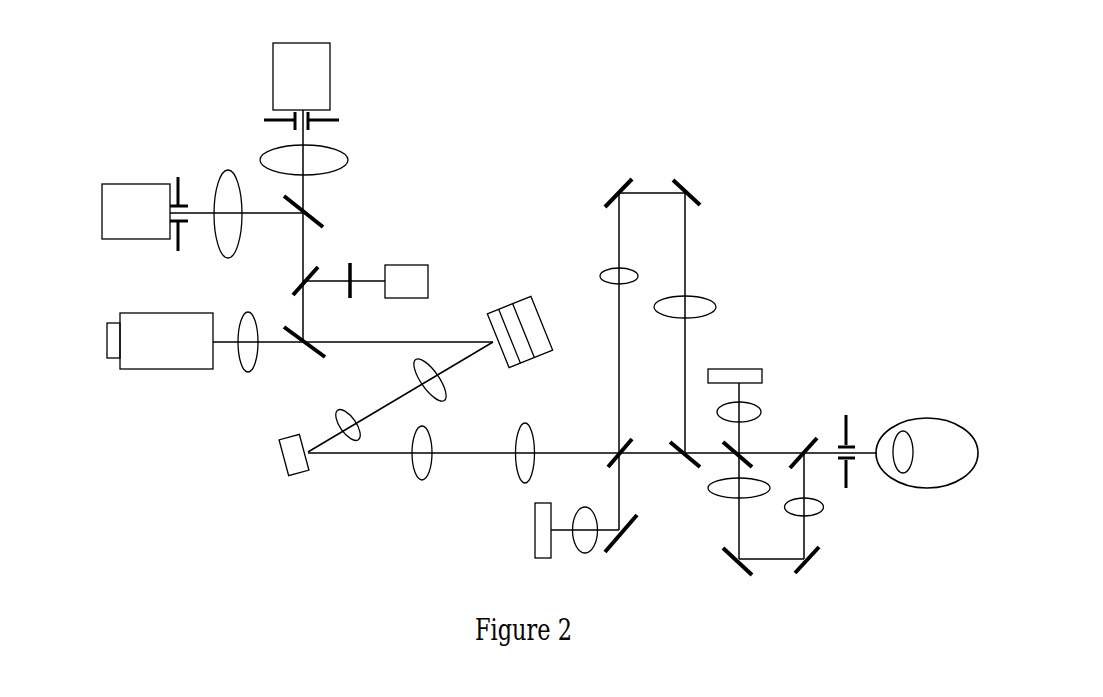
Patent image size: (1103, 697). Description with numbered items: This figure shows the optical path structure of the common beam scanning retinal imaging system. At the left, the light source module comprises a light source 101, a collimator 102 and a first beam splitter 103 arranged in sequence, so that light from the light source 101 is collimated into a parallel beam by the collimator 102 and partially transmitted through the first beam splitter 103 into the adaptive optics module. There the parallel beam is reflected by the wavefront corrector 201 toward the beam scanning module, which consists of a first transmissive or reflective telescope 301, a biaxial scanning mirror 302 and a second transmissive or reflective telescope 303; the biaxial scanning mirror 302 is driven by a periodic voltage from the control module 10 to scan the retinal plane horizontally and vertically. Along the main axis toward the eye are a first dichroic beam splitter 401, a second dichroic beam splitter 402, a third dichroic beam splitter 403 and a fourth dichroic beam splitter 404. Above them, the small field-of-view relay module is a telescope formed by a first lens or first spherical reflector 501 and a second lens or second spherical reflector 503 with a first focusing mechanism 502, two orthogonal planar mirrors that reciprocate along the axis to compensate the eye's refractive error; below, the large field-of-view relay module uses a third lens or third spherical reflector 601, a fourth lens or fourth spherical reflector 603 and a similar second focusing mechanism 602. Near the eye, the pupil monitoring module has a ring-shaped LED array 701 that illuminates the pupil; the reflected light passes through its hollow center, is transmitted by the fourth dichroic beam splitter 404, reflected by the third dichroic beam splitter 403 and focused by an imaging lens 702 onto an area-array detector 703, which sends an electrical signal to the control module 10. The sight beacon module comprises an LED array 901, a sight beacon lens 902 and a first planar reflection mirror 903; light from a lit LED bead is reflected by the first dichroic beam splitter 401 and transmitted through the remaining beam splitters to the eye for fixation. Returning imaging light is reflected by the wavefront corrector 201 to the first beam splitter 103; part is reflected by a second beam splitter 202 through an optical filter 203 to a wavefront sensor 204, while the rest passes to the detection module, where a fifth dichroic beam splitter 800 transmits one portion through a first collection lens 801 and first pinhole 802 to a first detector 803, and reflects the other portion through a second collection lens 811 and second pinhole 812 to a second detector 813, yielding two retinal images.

The control module 10 is at (933, 490).
The light source 101 is at (167, 313).
The collimator 102 is at (252, 372).
The first beam splitter 103 is at (310, 337).
The wavefront corrector 201 is at (490, 313).
The second beam splitter 202 is at (293, 292).
The optical filter 203 is at (353, 262).
The wavefront sensor 204 is at (403, 265).
The first transmissive or reflective telescope 301 is at (432, 400).
The biaxial scanning mirror 302 is at (282, 440).
The second transmissive or reflective telescope 303 is at (522, 478).
The first dichroic beam splitter 401 is at (612, 447).
The second dichroic beam splitter 402 is at (677, 447).
The third dichroic beam splitter 403 is at (743, 450).
The fourth dichroic beam splitter 404 is at (812, 435).
The first lens or first spherical reflector 501 is at (600, 268).
The first focusing mechanism 502 is at (670, 177).
The second lens or second spherical reflector 503 is at (708, 297).
The third lens or third spherical reflector 601 is at (710, 490).
The second focusing mechanism 602 is at (798, 557).
The fourth lens or fourth spherical reflector 603 is at (825, 513).
The ring-shaped LED array 701 is at (852, 415).
The imaging lens 702 is at (760, 410).
The area-array detector 703 is at (747, 367).
The fifth dichroic beam splitter 800 is at (327, 223).
The first collection lens 801 is at (350, 158).
The first pinhole 802 is at (339, 118).
The first detector 803 is at (330, 77).
The second collection lens 811 is at (227, 170).
The second pinhole 812 is at (178, 177).
The second detector 813 is at (128, 184).
The LED array 901 is at (535, 518).
The sight beacon lens 902 is at (583, 510).
The first planar reflection mirror 903 is at (633, 533).